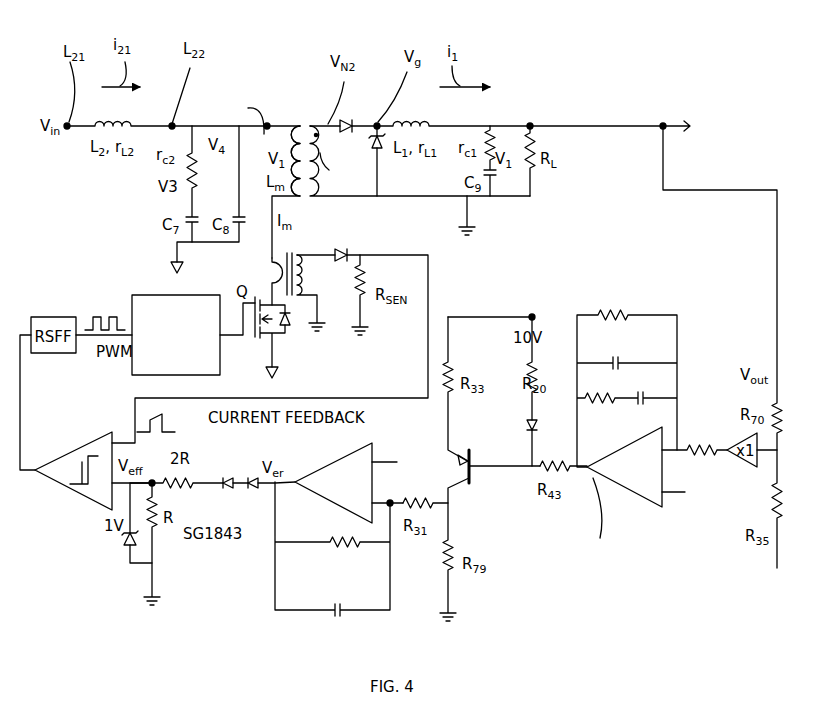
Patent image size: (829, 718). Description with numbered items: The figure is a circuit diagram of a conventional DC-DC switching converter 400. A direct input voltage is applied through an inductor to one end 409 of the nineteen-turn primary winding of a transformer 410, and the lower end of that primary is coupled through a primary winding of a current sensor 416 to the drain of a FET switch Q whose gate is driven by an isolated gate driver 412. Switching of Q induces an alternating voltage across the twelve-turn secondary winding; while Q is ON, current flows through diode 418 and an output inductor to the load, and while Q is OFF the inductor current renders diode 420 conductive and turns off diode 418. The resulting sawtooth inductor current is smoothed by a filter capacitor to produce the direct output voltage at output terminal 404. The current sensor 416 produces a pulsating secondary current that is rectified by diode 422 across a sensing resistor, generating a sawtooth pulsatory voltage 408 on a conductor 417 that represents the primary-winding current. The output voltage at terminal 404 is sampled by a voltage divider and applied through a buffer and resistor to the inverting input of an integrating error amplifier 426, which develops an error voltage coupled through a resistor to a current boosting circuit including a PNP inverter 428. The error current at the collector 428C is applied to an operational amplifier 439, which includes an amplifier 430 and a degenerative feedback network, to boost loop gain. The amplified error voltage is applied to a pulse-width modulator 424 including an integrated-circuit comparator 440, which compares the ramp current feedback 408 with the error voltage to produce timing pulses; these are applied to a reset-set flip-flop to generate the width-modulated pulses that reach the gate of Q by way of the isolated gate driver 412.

The DC-DC switching converter 400 is at (262, 648).
The output terminal 404 is at (667, 122).
The pulsatory voltage 408 is at (162, 424).
The end of primary winding 409 is at (267, 123).
The transformer 410 is at (300, 76).
The isolated gate driver 412 is at (132, 302).
The current sensor 416 is at (287, 252).
The conductor 417 is at (400, 397).
The diode 418 is at (348, 120).
The diode 420 is at (380, 150).
The diode 422 is at (348, 256).
The pulse-width modulator 424 is at (60, 492).
The integrating error amplifier 426 is at (627, 511).
The PNP inverter 428 is at (472, 472).
The collector 428C is at (455, 499).
The amplifier 430 is at (332, 470).
The operational amplifier 439 is at (318, 526).
The integrated-circuit comparator 440 is at (66, 456).